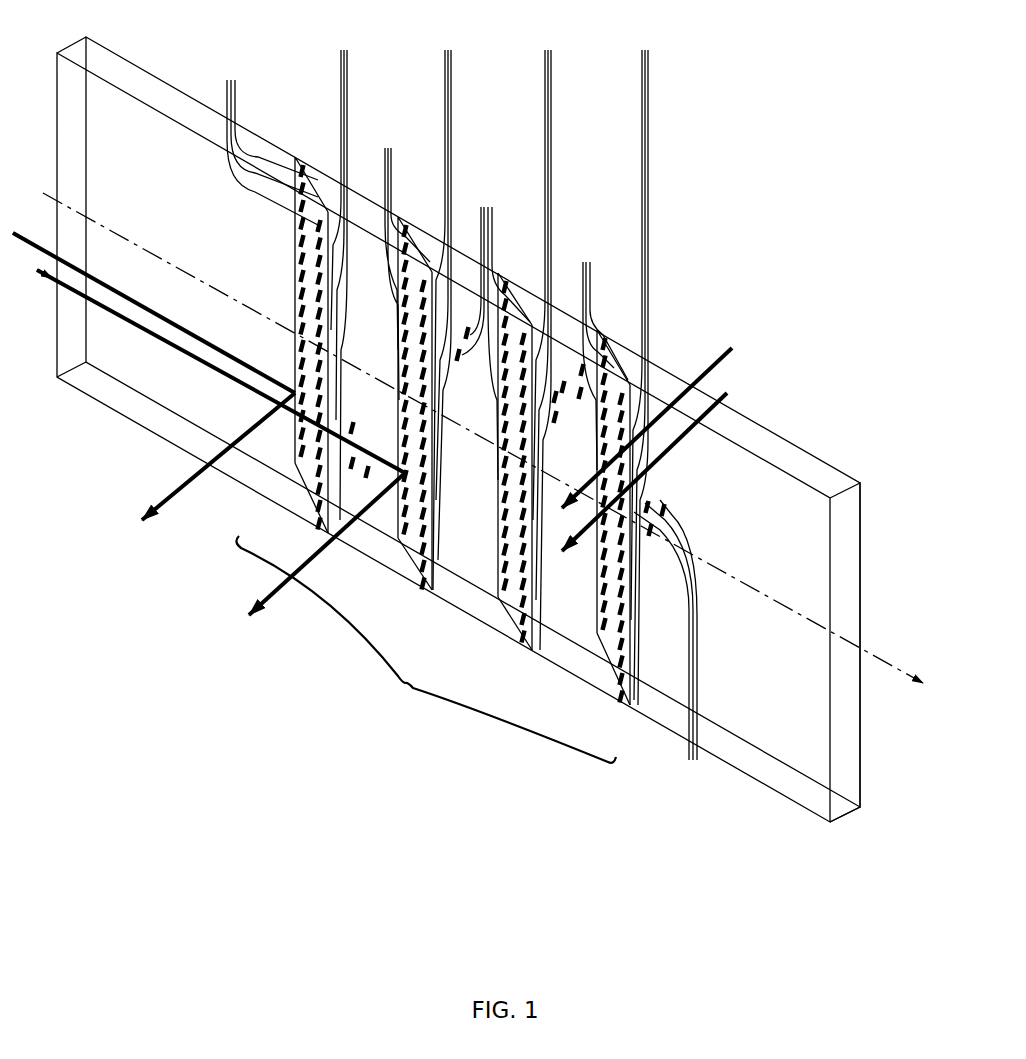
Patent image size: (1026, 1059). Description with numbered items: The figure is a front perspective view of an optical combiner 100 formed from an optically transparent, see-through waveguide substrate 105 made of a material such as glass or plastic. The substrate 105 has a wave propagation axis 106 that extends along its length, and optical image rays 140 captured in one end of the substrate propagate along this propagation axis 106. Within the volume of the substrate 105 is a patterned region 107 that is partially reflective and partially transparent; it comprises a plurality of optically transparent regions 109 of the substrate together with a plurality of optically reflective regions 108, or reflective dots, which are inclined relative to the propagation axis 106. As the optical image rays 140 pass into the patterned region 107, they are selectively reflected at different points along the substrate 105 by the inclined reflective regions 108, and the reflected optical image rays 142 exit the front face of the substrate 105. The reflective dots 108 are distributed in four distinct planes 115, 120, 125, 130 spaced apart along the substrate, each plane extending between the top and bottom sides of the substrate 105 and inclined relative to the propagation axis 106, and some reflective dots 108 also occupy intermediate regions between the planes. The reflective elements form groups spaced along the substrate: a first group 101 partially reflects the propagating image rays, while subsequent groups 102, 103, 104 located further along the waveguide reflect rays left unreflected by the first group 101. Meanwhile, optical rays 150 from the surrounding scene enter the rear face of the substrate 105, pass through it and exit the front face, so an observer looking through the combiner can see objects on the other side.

The optical combiner 100 is at (200, 436).
The first group of reflective dots 101 is at (308, 366).
The second group of reflective elements 102 is at (405, 422).
The third group of reflective elements 103 is at (508, 478).
The fourth group of reflective elements 104 is at (611, 535).
The waveguide substrate 105 is at (813, 480).
The wave propagation axis 106 is at (870, 657).
The patterned region 107 is at (426, 649).
The optically reflective regions 108 is at (461, 422).
The optically transparent regions 109 is at (495, 364).
The first plane 115 is at (295, 463).
The second plane 120 is at (398, 538).
The third plane 125 is at (498, 597).
The fourth plane 130 is at (597, 633).
The optical image rays 140 is at (38, 272).
The reflected optical image rays 142 is at (248, 520).
The optical rays 150 is at (732, 348).